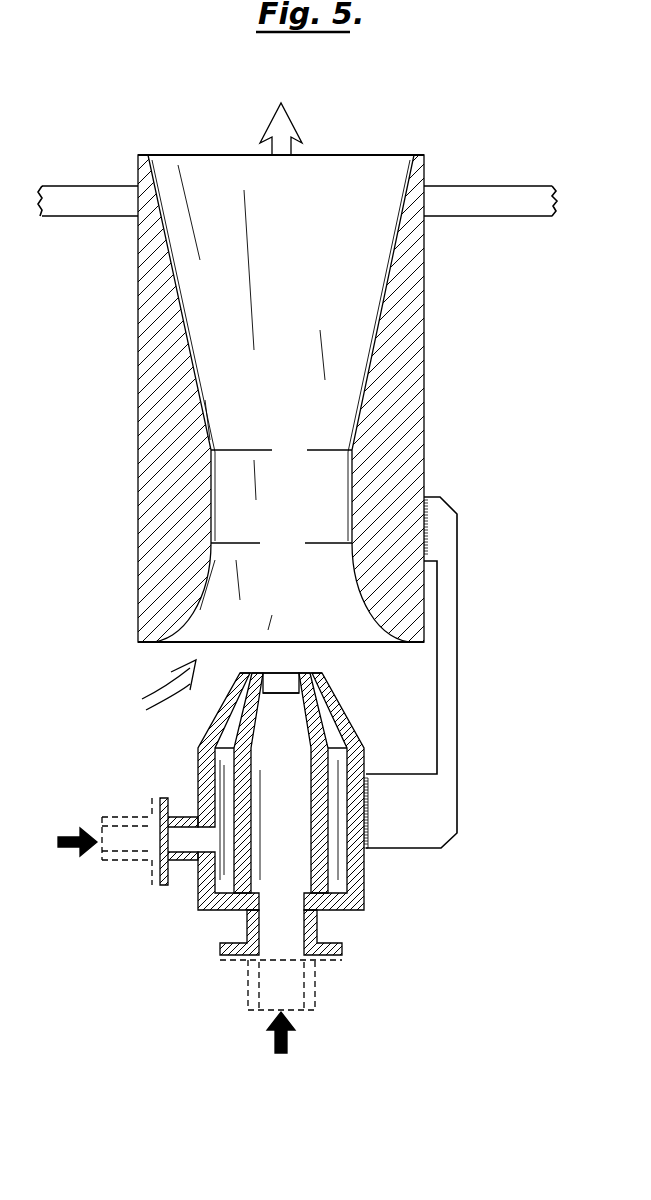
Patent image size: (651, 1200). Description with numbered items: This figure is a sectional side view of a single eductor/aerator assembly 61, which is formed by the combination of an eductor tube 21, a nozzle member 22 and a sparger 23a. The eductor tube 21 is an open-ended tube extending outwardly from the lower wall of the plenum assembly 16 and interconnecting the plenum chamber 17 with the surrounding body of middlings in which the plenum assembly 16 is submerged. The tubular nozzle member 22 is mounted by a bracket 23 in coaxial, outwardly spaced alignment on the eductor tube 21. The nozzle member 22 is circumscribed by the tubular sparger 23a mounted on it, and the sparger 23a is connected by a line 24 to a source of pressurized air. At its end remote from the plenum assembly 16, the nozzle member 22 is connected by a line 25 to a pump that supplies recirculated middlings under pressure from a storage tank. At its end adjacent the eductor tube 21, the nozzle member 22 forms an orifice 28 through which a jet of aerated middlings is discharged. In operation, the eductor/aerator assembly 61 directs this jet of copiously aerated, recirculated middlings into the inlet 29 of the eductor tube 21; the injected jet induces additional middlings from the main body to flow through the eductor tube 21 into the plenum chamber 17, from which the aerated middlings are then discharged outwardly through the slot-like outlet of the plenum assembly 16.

The plenum assembly 16 is at (484, 205).
The plenum chamber 17 is at (428, 110).
The eductor tube 21 is at (414, 384).
The nozzle member 22 is at (236, 866).
The bracket 23 is at (452, 679).
The sparger 23a is at (364, 864).
The line 24 is at (130, 860).
The line 25 is at (318, 990).
The orifice 28 is at (288, 672).
The inlet 29 is at (272, 617).
The eductor/aerator assembly 61 is at (112, 674).